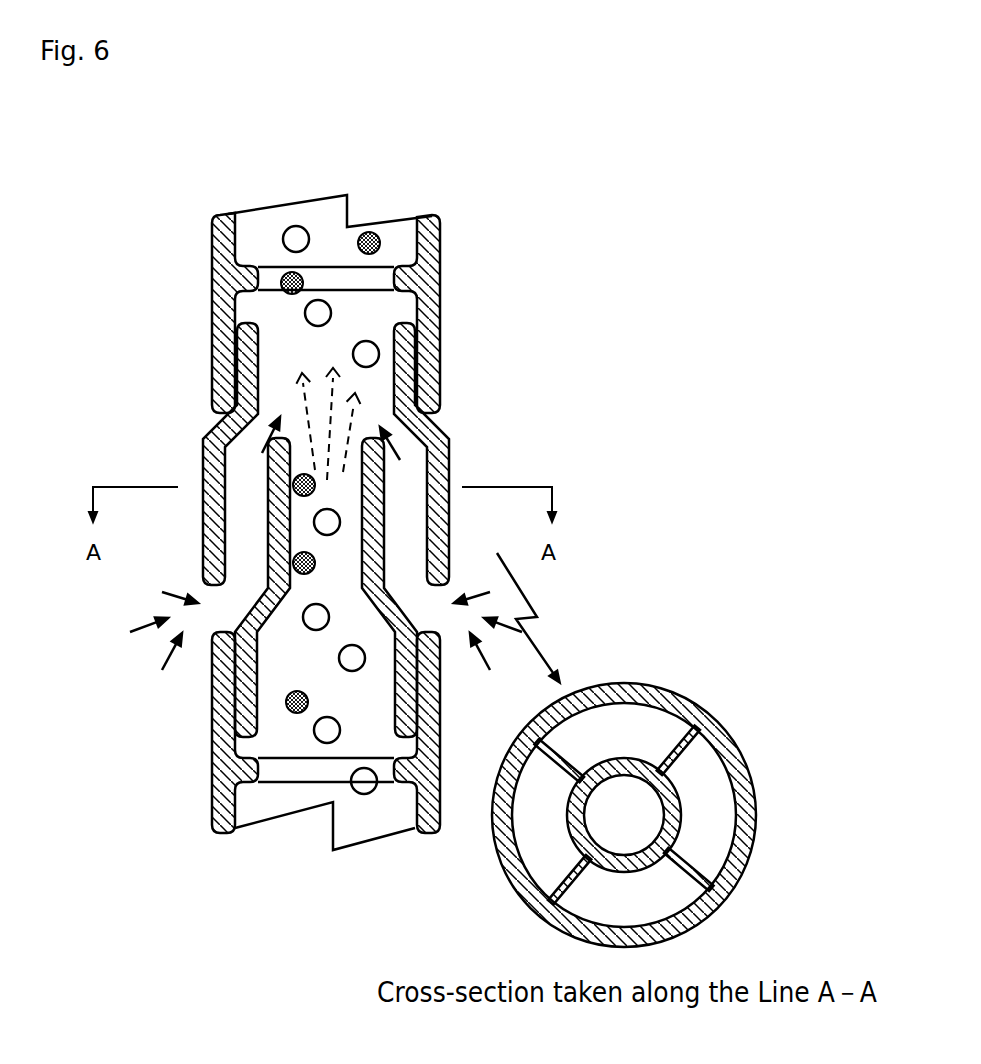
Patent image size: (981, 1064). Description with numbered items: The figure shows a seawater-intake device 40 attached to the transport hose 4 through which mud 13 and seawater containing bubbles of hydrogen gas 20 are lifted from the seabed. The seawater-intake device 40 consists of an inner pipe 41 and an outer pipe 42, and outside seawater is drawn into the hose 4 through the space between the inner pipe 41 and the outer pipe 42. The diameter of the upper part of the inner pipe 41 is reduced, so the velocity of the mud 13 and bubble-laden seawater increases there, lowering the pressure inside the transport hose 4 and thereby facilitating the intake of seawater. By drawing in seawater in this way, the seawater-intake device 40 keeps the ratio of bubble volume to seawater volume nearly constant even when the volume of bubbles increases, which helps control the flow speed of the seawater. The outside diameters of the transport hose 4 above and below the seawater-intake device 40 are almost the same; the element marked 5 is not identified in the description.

The transport hose 4 is at (442, 290).
The bottom portion 5 is at (345, 823).
The mud 13 is at (380, 230).
The hydrogen gas 20 is at (280, 213).
The seawater-intake device 40 is at (618, 396).
The inner pipe 41 is at (267, 488).
The outer pipe 42 is at (450, 452).